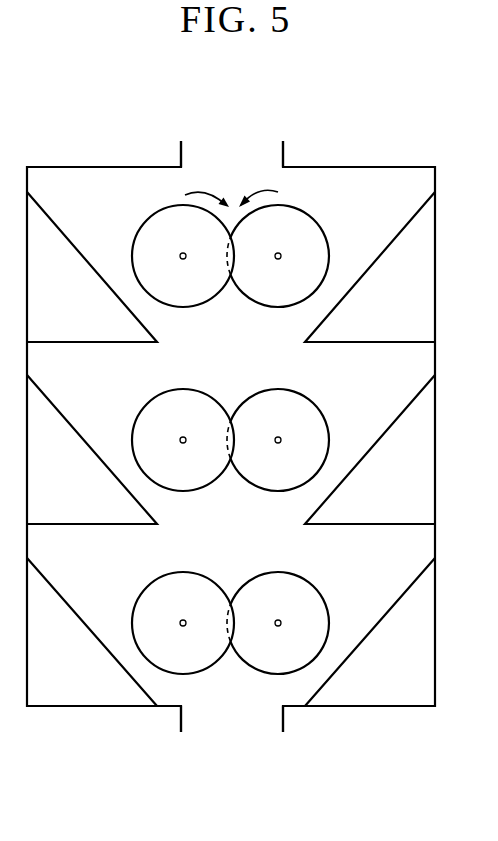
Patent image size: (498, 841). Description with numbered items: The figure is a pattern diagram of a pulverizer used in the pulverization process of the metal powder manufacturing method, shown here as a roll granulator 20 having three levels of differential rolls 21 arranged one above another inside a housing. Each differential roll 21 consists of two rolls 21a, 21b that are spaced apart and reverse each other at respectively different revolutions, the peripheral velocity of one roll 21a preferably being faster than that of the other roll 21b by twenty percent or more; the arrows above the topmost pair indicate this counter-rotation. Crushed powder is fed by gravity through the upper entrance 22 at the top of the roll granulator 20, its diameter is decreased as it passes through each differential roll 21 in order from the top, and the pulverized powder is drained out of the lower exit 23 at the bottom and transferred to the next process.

The roll granulator 20 is at (80, 121).
The differential roll 21 is at (258, 431).
The roll 21a is at (279, 308).
The roll 21b is at (183, 308).
The upper entrance 22 is at (231, 143).
The lower exit 23 is at (233, 725).